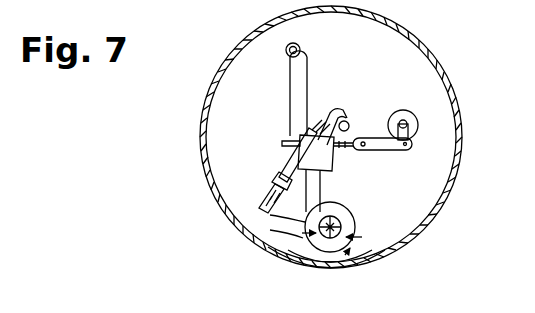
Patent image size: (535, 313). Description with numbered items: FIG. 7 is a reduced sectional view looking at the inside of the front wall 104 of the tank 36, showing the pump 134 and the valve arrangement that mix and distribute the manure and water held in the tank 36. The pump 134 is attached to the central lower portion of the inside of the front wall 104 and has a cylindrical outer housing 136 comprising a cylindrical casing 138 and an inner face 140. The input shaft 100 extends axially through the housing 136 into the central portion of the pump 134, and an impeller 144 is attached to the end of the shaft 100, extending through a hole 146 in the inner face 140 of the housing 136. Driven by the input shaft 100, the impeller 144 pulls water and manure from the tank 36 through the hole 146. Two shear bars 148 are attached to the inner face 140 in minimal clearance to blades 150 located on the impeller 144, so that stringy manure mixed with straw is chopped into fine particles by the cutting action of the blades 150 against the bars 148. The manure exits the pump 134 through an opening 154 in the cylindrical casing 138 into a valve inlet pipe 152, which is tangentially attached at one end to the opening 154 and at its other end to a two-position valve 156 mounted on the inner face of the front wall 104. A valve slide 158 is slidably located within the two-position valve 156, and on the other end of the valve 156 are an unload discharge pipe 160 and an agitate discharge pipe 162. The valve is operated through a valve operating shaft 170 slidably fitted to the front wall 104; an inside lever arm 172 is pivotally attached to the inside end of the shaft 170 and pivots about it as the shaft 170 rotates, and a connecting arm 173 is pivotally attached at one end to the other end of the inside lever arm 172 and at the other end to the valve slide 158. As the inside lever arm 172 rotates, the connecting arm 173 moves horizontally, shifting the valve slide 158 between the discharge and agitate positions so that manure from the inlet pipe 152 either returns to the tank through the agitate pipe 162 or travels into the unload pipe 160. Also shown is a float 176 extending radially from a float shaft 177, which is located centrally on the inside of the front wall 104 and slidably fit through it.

The tank 36 is at (421, 46).
The front wall 104 is at (363, 50).
The unload discharge pipe 160 is at (272, 86).
The two-position valve 156 is at (289, 72).
The agitate discharge pipe 162 is at (340, 113).
The float shaft 177 is at (312, 128).
The valve slide 158 is at (282, 143).
The float 176 is at (277, 184).
The blades 150 is at (281, 190).
The opening 154 is at (303, 210).
The connecting arm 173 is at (392, 150).
The inside lever arm 172 is at (410, 127).
The valve operating shaft 170 is at (408, 122).
The cylindrical outer housing 136 is at (345, 260).
The input shaft 100 is at (337, 257).
The hole 146 is at (290, 242).
The pump 134 is at (257, 253).
The inner face 140 is at (290, 247).
The impeller 144 is at (347, 252).
The shear bars 148 is at (347, 230).
The cylindrical casing 138 is at (340, 222).
The valve inlet pipe 152 is at (340, 175).